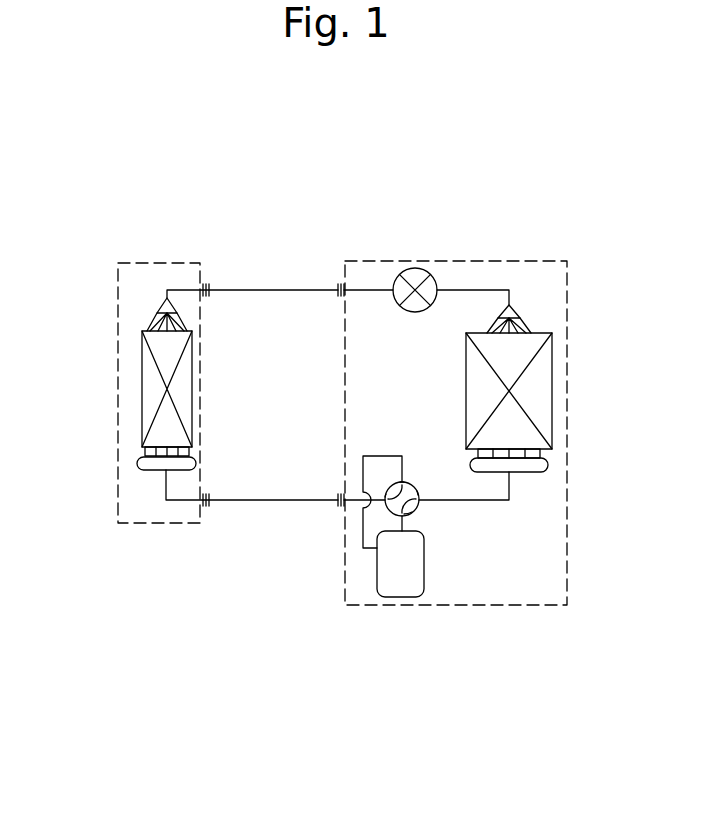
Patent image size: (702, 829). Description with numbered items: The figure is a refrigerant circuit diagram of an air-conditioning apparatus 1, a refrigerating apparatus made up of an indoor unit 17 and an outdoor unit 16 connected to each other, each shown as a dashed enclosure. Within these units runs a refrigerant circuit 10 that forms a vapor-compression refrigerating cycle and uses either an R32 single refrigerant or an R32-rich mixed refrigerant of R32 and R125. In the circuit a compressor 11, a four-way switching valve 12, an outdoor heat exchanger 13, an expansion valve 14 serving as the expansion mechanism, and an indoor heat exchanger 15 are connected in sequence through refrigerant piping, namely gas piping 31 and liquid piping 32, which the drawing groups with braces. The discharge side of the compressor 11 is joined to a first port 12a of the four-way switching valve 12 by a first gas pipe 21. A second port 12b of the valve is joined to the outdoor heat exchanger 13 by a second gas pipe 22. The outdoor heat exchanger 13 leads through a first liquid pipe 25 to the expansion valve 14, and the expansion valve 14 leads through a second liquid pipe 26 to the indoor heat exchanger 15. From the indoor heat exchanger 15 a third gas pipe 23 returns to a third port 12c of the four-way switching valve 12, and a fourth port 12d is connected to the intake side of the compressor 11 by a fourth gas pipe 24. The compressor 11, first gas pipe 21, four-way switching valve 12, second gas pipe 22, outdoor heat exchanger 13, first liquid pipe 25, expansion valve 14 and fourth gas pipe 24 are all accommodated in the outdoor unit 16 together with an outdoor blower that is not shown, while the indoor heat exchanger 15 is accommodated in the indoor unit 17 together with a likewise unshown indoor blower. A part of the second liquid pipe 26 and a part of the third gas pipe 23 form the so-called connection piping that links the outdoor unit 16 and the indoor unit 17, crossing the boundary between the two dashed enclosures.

The air-conditioning apparatus 1 is at (171, 88).
The refrigerant circuit 10 is at (297, 258).
The compressor 11 is at (424, 553).
The four-way switching valve 12 is at (414, 486).
The first port 12a is at (408, 511).
The second port 12b is at (418, 491).
The third port 12c is at (403, 484).
The fourth port 12d is at (388, 494).
The outdoor heat exchanger 13 is at (552, 380).
The expansion valve 14 is at (415, 268).
The indoor heat exchanger 15 is at (142, 383).
The outdoor unit 16 is at (541, 261).
The indoor unit 17 is at (117, 297).
The first gas pipe 21 is at (408, 527).
The second gas pipe 22 is at (500, 503).
The third gas pipe 23 is at (302, 500).
The fourth gas pipe 24 is at (363, 528).
The first liquid pipe 25 is at (463, 290).
The second liquid pipe 26 is at (323, 290).
The gas piping 31 is at (312, 664).
The liquid piping 32 is at (357, 156).